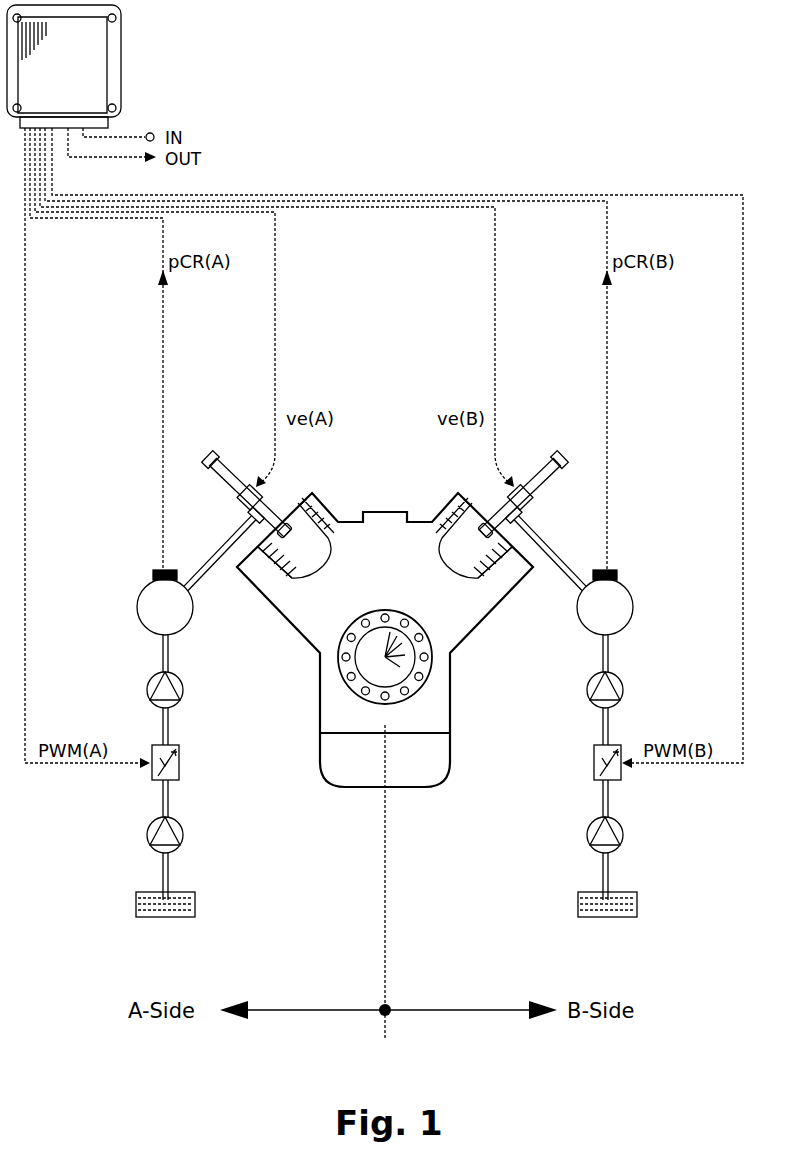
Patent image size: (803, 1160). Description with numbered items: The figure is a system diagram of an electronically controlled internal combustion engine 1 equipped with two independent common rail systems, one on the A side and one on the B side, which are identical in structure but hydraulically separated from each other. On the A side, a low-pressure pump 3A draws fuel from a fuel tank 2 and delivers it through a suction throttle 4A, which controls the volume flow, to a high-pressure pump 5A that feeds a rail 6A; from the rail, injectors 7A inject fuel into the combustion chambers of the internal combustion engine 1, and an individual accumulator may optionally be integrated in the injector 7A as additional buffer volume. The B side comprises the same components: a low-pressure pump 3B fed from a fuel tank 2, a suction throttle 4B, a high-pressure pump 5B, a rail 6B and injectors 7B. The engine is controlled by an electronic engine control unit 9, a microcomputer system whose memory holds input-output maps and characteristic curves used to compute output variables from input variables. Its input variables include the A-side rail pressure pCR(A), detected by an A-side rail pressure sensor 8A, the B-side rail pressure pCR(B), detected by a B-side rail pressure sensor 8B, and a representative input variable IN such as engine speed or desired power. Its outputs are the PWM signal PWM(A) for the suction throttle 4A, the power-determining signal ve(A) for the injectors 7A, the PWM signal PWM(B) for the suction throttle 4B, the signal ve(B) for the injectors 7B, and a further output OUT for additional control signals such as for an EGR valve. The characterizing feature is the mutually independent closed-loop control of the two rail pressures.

The internal combustion engine 1 is at (385, 527).
The fuel tank 2 is at (191, 893).
The low-pressure pump 3A is at (152, 826).
The low-pressure pump 3B is at (624, 826).
The suction throttle 4A is at (178, 751).
The suction throttle 4B is at (595, 753).
The high-pressure pump 5A is at (154, 676).
The high-pressure pump 5B is at (594, 678).
The rail 6A is at (152, 617).
The rail 6B is at (592, 617).
The injectors 7A is at (225, 468).
The injectors 7B is at (547, 468).
The rail pressure sensor 8A is at (160, 574).
The rail pressure sensor 8B is at (611, 574).
The electronic engine control unit 9 is at (59, 101).